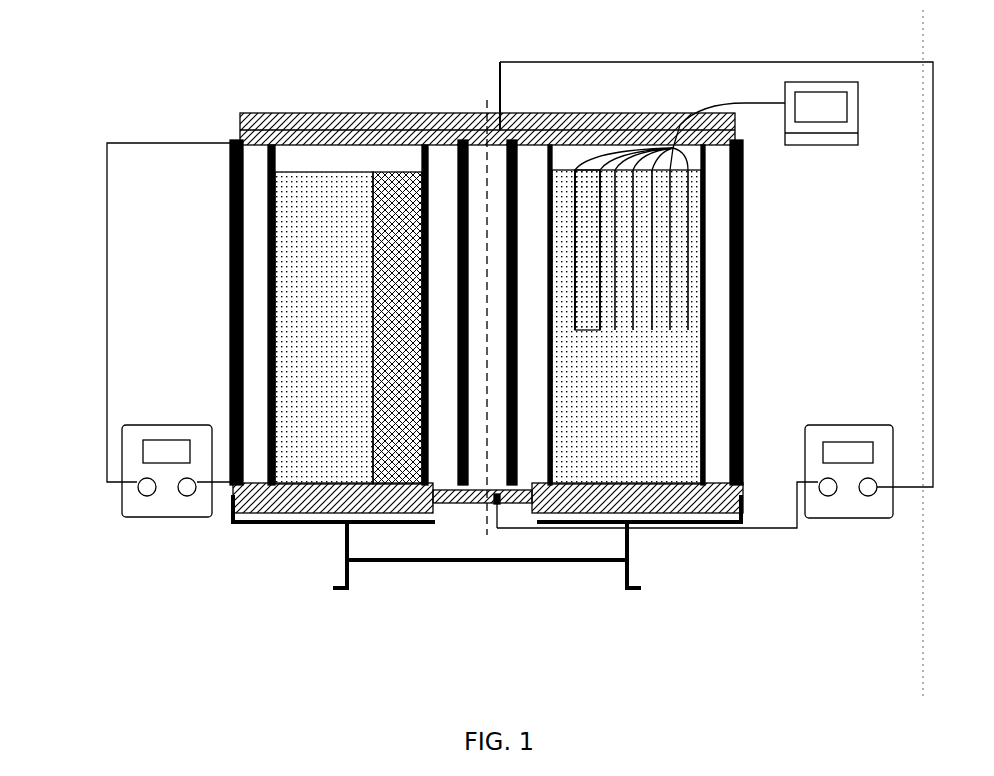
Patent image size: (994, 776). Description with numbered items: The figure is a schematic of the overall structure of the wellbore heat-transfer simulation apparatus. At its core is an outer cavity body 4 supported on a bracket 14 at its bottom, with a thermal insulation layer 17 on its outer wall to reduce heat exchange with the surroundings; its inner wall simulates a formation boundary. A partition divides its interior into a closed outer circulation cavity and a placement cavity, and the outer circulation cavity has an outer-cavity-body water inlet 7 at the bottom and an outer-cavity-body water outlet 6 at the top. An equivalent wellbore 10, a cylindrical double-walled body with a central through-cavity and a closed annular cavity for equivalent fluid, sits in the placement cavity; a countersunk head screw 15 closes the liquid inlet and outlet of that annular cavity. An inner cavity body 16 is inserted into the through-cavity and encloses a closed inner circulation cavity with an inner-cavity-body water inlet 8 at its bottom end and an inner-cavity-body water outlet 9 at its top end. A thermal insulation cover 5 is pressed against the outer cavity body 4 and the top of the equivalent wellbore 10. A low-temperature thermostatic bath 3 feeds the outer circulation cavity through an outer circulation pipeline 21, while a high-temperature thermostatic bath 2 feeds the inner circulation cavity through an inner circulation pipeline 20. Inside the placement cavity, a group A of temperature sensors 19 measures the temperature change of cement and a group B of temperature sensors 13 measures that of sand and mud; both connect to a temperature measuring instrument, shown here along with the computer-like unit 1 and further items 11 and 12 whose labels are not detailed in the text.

The controller / computer 1 is at (845, 145).
The high-temperature thermostatic bath 2 is at (868, 505).
The low-temperature thermostatic bath 3 is at (160, 515).
The outer cavity body 4 is at (385, 513).
The thermal insulation cover 5 is at (242, 116).
The outer-cavity-body water outlet 6 is at (240, 142).
The outer-cavity-body water inlet 7 is at (236, 495).
The inner-cavity-body water inlet 8 is at (498, 500).
The inner-cavity-body water outlet 9 is at (500, 120).
The equivalent wellbore 10 is at (430, 518).
The electrode (cross-hatched) 11 is at (400, 172).
The electrolyte in left cell 12 is at (323, 172).
The group B of temperature sensors 13 is at (652, 252).
The bracket 14 is at (630, 565).
The countersunk head screw 15 is at (523, 140).
The inner cavity body 16 is at (470, 116).
The thermal insulation layer 17 is at (745, 312).
The group A of temperature sensors 19 is at (598, 215).
The inner circulation pipeline 20 is at (760, 530).
The outer circulation pipeline 21 is at (107, 477).